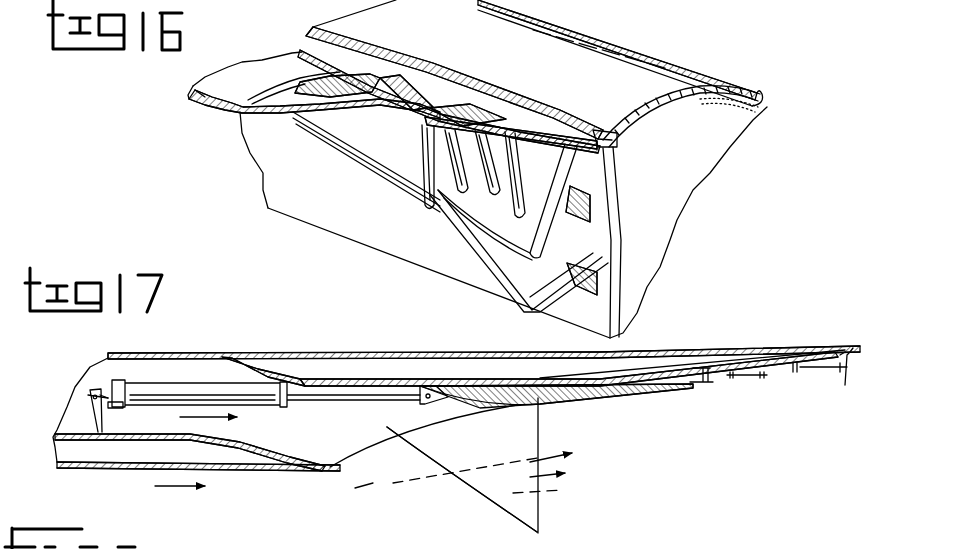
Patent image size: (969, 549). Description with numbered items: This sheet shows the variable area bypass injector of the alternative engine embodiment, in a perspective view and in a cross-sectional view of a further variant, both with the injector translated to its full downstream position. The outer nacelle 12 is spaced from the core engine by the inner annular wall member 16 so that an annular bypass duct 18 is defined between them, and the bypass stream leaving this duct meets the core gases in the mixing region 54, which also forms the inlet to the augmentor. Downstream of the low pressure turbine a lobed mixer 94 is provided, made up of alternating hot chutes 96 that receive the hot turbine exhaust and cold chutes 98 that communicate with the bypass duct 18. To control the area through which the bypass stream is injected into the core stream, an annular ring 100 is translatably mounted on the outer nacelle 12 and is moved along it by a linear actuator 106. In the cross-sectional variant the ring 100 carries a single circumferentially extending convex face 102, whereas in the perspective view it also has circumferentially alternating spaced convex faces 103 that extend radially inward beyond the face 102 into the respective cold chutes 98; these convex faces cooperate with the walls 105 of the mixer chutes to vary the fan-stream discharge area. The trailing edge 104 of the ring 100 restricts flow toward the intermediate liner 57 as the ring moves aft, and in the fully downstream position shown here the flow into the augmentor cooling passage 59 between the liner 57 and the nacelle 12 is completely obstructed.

In FIG. 16, the outer nacelle 12 is at (548, 31).
In FIG. 17, the outer nacelle 12 is at (382, 352).
In FIG. 16, the inner annular wall member 16 is at (201, 104).
In FIG. 17, the inner annular wall member 16 is at (128, 432).
In FIG. 16, the bypass duct 18 is at (257, 66).
In FIG. 17, the bypass duct 18 is at (208, 383).
In FIG. 16, the mixing region 54 is at (234, 176).
In FIG. 17, the mixing region 54 is at (249, 497).
In FIG. 16, the intermediate nacelle or liner 57 is at (718, 108).
In FIG. 17, the intermediate nacelle or liner 57 is at (780, 376).
In FIG. 16, the passage 59 is at (760, 96).
In FIG. 17, the passage 59 is at (830, 355).
In FIG. 16, the lobed mixer 94 is at (361, 178).
In FIG. 17, the lobed mixer 94 is at (424, 510).
In FIG. 16, the hot chutes 96 is at (322, 146).
In FIG. 17, the hot chutes 96 is at (523, 512).
In FIG. 16, the cold chutes 98 is at (432, 186).
In FIG. 17, the cold chutes 98 is at (461, 465).
In FIG. 16, the annular ring 100 is at (440, 104).
In FIG. 17, the annular ring 100 is at (520, 380).
In FIG. 16, the convex face 102 is at (410, 108).
In FIG. 17, the convex face 102 is at (487, 405).
In FIG. 16, the spaced convex faces 103 is at (432, 146).
In FIG. 16, the trailing edge 104 is at (619, 146).
In FIG. 17, the trailing edge 104 is at (680, 380).
In FIG. 16, the walls 105 is at (480, 101).
In FIG. 17, the walls 105 is at (548, 400).
In FIG. 17, the linear actuator 106 is at (214, 384).